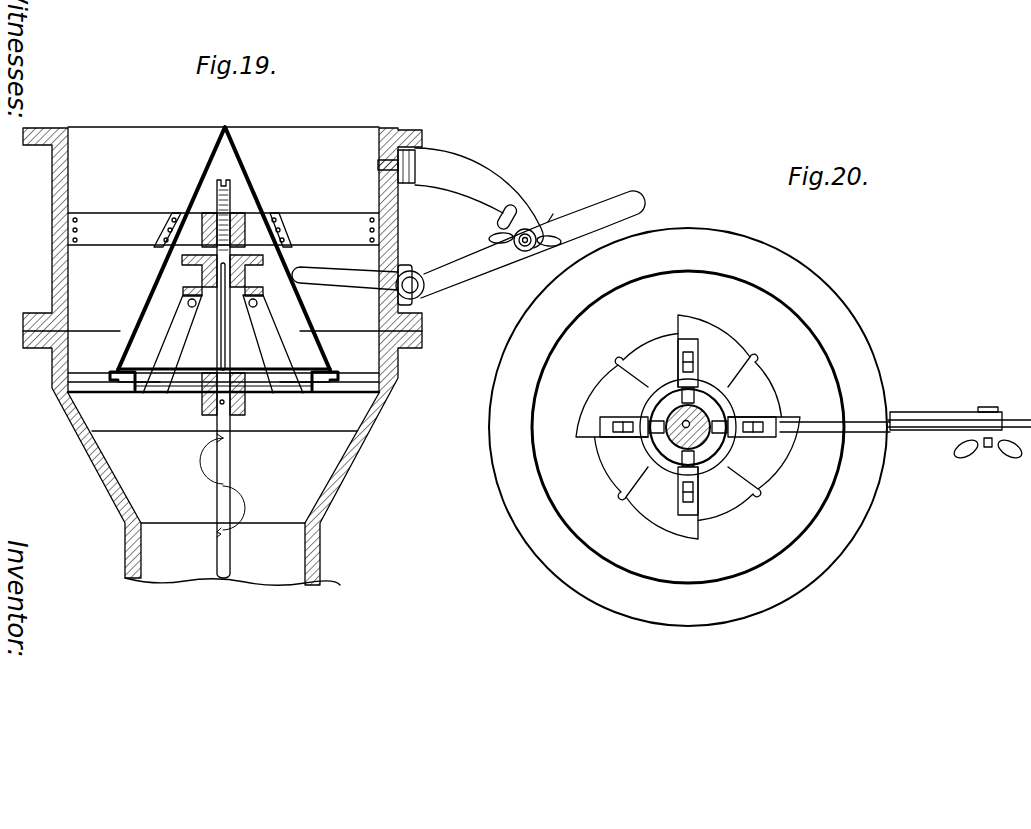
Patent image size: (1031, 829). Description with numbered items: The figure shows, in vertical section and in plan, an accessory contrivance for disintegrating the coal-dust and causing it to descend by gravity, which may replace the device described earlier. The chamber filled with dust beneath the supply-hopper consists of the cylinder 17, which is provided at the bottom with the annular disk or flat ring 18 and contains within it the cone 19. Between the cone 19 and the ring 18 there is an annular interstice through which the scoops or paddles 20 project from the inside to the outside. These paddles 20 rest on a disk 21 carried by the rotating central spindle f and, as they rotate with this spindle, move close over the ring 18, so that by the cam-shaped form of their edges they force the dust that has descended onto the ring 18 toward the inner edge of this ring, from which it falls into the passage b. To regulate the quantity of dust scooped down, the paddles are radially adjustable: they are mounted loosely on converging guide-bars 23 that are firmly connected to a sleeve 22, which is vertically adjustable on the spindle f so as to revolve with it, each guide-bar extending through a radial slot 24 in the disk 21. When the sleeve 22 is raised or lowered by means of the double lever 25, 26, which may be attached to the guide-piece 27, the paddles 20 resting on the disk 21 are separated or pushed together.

In FIG. 19, the cylinder 17 is at (54, 242).
In FIG. 20, the cylinder 17 is at (860, 340).
In FIG. 19, the annular disk or flat ring 18 is at (98, 394).
In FIG. 20, the annular disk or flat ring 18 is at (774, 311).
In FIG. 19, the cone 19 is at (160, 272).
In FIG. 19, the scoops or paddles 20 is at (112, 377).
In FIG. 20, the scoops or paddles 20 is at (725, 333).
In FIG. 19, the disk 21 is at (245, 405).
In FIG. 20, the disk 21 is at (767, 398).
In FIG. 19, the sleeve 22 is at (184, 292).
In FIG. 19, the converging guide-bars 23 is at (176, 332).
In FIG. 19, the radial slot 24 is at (184, 393).
In FIG. 19, the double lever 25 is at (338, 274).
In FIG. 20, the double lever 25 is at (813, 428).
In FIG. 19, the double lever 26 is at (486, 270).
In FIG. 19, the guide-piece 27 is at (486, 183).
In FIG. 20, the guide-piece 27 is at (940, 414).
In FIG. 19, the central spindle f is at (228, 462).
In FIG. 19, the passage b is at (334, 470).